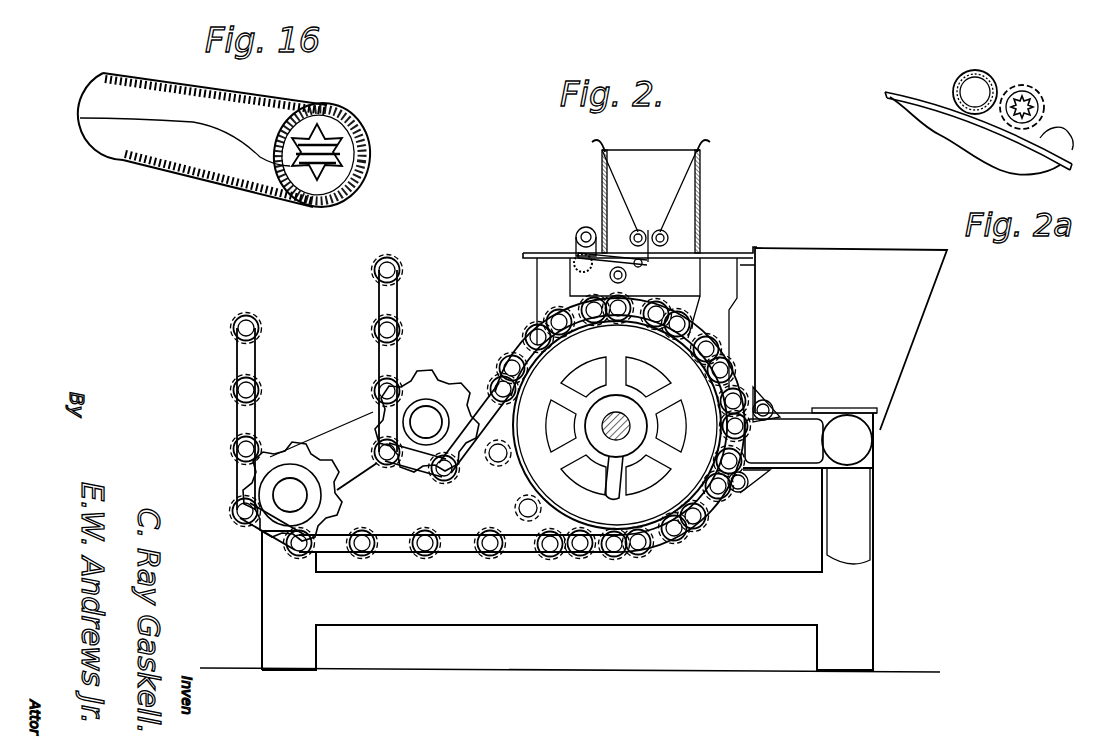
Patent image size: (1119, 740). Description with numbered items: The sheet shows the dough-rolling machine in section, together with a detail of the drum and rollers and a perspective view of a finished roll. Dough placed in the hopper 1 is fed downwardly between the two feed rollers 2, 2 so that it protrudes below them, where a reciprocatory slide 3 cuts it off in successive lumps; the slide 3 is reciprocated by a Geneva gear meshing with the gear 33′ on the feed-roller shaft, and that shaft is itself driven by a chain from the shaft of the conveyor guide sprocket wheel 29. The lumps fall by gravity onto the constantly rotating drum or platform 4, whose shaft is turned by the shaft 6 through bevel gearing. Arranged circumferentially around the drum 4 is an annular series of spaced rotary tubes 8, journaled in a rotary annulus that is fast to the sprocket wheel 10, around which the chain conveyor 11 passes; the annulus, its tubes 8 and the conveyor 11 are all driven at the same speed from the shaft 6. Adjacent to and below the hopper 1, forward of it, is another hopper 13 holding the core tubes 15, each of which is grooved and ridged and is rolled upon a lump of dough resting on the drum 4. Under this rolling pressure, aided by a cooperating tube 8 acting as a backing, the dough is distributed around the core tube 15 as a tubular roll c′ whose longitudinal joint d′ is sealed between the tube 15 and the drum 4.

In FIG. 2, the hopper 1 is at (652, 162).
In FIG. 2, the rollers 2 is at (659, 231).
In FIG. 2, the reciprocatory slide 3 is at (645, 260).
In FIG. 2, the gear 33′ is at (578, 238).
In FIG. 2, the hopper 13 is at (810, 257).
In FIG. 2A, the tubes 15 is at (1005, 125).
In FIG. 2, the tubes 15 is at (397, 270).
In FIG. 2A, the rotary drum 4 is at (978, 131).
In FIG. 2, the rotary drum 4 is at (695, 328).
In FIG. 2A, the rotary tubes 8 is at (955, 82).
In FIG. 2, the rotary tubes 8 is at (655, 318).
In FIG. 2, the conveyor guide sprocket wheel 29 is at (432, 377).
In FIG. 2, the chain conveyor 11 is at (394, 297).
In FIG. 2, the sprocket wheel 10 is at (512, 476).
In FIG. 2A, the shaft 6 is at (1068, 138).
In FIG. 16, the tubular roll c′ is at (277, 95).
In FIG. 16, the longitudinal joint d′ is at (200, 158).